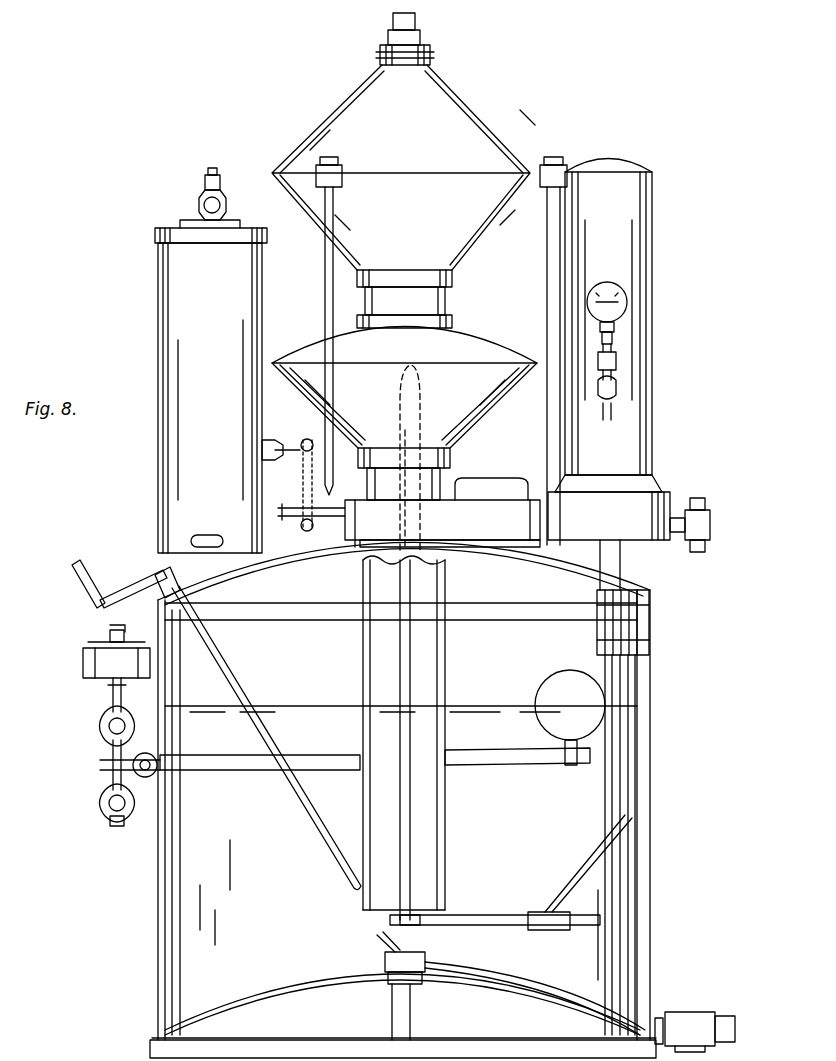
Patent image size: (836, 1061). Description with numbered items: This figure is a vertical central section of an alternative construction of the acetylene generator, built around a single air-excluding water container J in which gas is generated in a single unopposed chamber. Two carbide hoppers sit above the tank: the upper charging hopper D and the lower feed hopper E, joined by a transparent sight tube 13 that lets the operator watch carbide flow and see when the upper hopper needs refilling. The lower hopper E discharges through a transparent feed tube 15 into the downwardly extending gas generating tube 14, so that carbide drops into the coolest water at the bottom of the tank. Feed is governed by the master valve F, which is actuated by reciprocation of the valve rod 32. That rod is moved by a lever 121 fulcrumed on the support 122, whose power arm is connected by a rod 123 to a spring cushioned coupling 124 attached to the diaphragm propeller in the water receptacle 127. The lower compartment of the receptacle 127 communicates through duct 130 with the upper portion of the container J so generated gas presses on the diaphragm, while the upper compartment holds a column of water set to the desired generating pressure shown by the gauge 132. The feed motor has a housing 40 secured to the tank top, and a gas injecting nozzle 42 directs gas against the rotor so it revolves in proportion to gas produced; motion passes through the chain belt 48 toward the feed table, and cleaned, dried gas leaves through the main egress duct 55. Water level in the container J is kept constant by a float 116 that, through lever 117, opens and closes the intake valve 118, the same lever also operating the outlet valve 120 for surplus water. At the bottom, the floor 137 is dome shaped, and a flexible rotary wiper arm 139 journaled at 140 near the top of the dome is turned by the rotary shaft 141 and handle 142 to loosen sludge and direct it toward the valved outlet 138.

The upper charging hopper D is at (467, 125).
The transparent sight tube 13 is at (448, 300).
The lower feed hopper E is at (468, 362).
The master valve F is at (410, 430).
The transparent feed tube 15 is at (455, 490).
The motor housing 40 is at (157, 320).
The main egress duct 55 is at (198, 203).
The gas injecting nozzle 42 is at (207, 533).
The chain belt 48 is at (300, 490).
The water receptacle 127 is at (653, 410).
The gauge 132 is at (628, 300).
The duct 130 is at (640, 580).
The spring cushioned coupling 124 is at (652, 632).
The water container J is at (705, 840).
The gas generating tube 14 is at (362, 658).
The valve rod 32 is at (415, 848).
The float 116 is at (552, 685).
The lever 117 is at (518, 785).
The rotary shaft 141 is at (340, 868).
The handle 142 is at (95, 548).
The intake valve 118 is at (100, 730).
The outlet valve 120 is at (104, 814).
The rod 123 is at (612, 898).
The lever 121 is at (490, 910).
The support 122 is at (588, 852).
The floor 137 is at (280, 985).
The rotary wiper arm 139 is at (544, 972).
The journal 140 is at (383, 955).
The valved outlet 138 is at (695, 1010).